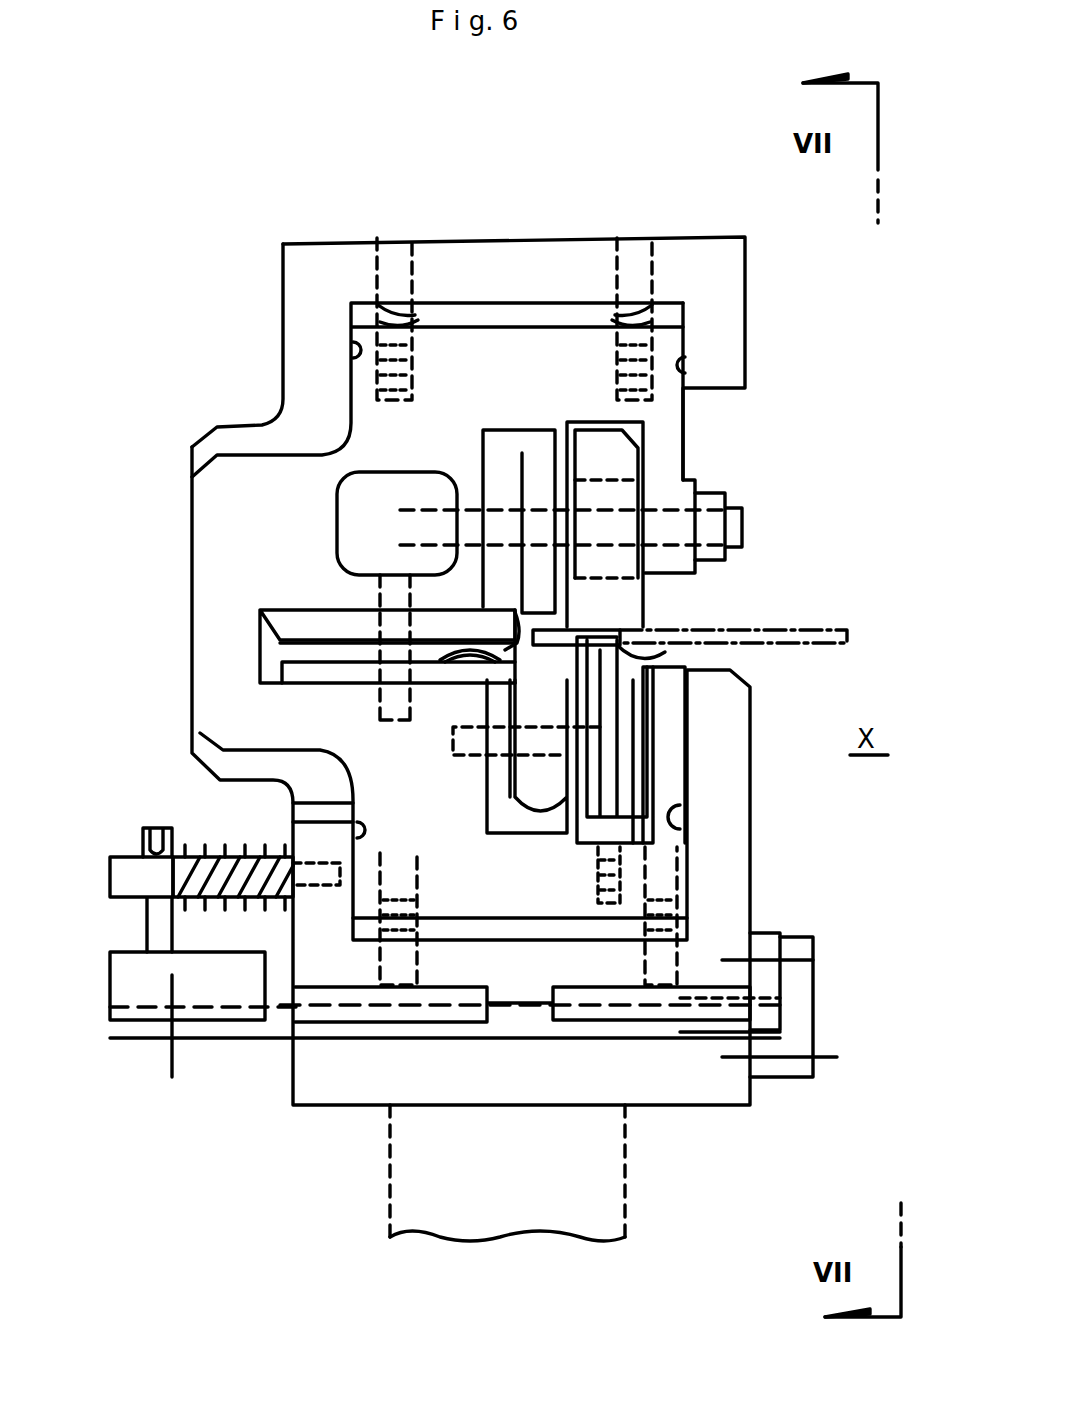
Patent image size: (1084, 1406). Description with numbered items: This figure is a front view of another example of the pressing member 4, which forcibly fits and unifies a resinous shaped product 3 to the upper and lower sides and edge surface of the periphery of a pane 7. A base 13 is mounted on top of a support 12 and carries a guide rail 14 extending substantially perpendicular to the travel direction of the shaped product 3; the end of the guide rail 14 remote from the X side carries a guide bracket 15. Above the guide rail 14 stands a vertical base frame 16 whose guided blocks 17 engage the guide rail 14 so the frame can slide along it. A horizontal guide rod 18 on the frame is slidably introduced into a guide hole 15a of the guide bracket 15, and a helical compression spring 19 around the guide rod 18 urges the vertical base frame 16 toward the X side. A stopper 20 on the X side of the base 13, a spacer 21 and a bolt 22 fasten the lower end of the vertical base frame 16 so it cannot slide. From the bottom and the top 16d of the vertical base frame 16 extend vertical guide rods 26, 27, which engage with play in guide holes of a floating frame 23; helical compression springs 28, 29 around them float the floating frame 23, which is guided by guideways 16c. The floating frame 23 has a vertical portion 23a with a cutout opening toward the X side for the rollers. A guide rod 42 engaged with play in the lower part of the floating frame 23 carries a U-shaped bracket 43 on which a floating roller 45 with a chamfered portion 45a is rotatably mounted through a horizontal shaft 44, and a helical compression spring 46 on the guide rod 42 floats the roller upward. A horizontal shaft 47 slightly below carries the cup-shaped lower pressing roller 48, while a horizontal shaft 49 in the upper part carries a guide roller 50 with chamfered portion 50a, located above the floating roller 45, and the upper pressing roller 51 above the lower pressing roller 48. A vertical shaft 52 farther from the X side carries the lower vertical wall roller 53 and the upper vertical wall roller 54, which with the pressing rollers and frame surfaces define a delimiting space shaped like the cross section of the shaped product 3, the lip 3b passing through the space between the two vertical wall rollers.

The shaped product 3 is at (510, 600).
The lip 3b is at (427, 593).
The pressing member 4 is at (272, 245).
The pane 7 is at (835, 633).
The support 12 is at (440, 1197).
The base 13 is at (718, 1100).
The guide rail 14 is at (428, 1030).
The guide bracket 15 is at (210, 992).
The guide hole 15a is at (150, 828).
The vertical base frame 16 is at (540, 240).
The guideways 16c is at (353, 350).
The top 16d is at (462, 258).
The guided blocks 17 is at (335, 1017).
The guide rod 18 is at (140, 873).
The helical compression spring 19 is at (230, 897).
The stopper 20 is at (803, 1028).
The spacer 21 is at (760, 945).
The bolt 22 is at (815, 950).
The floating frame 23 is at (190, 540).
The vertical portion 23a is at (220, 575).
The guide rods 26 is at (397, 968).
The guide rods 27 is at (390, 245).
The helical compression springs 28 is at (420, 940).
The helical compression springs 29 is at (415, 320).
The guide rod 42 is at (598, 893).
The bracket 43 is at (490, 810).
The horizontal shaft 44 is at (660, 707).
The floating roller 45 is at (620, 645).
The chamfered portion 45a is at (640, 655).
The helical compression spring 46 is at (598, 870).
The horizontal shaft 47 is at (453, 740).
The lower pressing roller 48 is at (497, 697).
The horizontal shaft 49 is at (470, 505).
The guide roller 50 is at (597, 455).
The chamfered portion 50a is at (640, 427).
The upper pressing roller 51 is at (530, 457).
The vertical shaft 52 is at (395, 590).
The lower vertical wall roller 53 is at (283, 680).
The upper vertical wall roller 54 is at (302, 625).